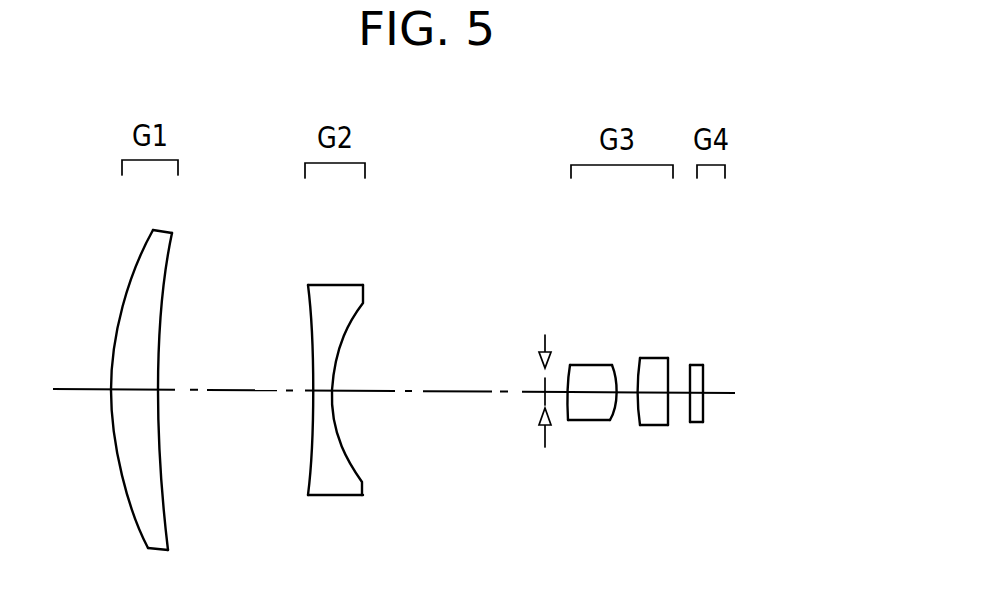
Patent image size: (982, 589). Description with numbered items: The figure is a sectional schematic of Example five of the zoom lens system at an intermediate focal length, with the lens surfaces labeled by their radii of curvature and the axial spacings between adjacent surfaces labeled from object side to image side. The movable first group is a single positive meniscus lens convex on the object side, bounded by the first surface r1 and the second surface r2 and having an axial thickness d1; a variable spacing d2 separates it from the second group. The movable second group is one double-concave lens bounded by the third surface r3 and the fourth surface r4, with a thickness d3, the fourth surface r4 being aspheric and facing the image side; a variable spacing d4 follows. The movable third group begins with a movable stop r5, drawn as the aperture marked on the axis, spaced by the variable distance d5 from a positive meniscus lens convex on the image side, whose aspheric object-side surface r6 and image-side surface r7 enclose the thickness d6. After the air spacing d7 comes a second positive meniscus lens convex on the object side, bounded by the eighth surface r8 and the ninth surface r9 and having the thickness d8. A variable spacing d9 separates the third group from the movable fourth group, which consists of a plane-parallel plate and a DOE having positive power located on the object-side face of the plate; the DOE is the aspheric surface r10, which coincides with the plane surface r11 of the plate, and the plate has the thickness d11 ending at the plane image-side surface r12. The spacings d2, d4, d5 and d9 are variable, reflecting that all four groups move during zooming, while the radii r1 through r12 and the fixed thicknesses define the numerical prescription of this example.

The radius of curvature of first lens surface r1 is at (132, 276).
The radius of curvature of second lens surface r2 is at (168, 278).
The radius of curvature of third lens surface r3 is at (310, 317).
The radius of curvature of fourth lens surface r4 is at (358, 317).
The stop r5 is at (543, 377).
The radius of curvature of sixth lens surface r6 is at (570, 375).
The radius of curvature of seventh lens surface r7 is at (617, 385).
The radius of curvature of eighth lens surface r8 is at (640, 372).
The radius of curvature of ninth lens surface r9 is at (670, 378).
The DOE surface r10 is at (689, 375).
The radius of curvature of eleventh surface r11 is at (829, 227).
The radius of curvature of twelfth surface r12 is at (705, 375).
The spacing between first and second lens surfaces d1 is at (146, 390).
The spacing between second and third lens surfaces d2 is at (242, 411).
The spacing between third and fourth lens surfaces d3 is at (323, 393).
The spacing between fourth and fifth surfaces d4 is at (398, 413).
The spacing between fifth and sixth surfaces d5 is at (563, 392).
The spacing between sixth and seventh lens surfaces d6 is at (592, 393).
The spacing between seventh and eighth lens surfaces d7 is at (624, 395).
The spacing between eighth and ninth lens surfaces d8 is at (655, 395).
The spacing between ninth and tenth surfaces d9 is at (677, 398).
The spacing between eleventh and twelfth surfaces d11 is at (703, 412).